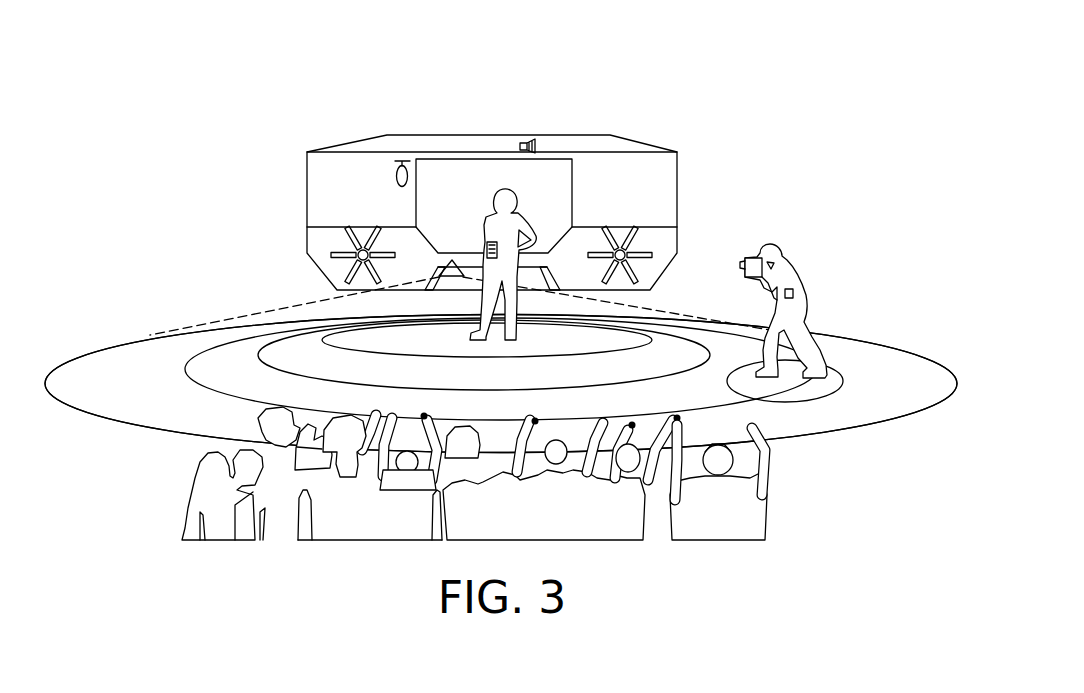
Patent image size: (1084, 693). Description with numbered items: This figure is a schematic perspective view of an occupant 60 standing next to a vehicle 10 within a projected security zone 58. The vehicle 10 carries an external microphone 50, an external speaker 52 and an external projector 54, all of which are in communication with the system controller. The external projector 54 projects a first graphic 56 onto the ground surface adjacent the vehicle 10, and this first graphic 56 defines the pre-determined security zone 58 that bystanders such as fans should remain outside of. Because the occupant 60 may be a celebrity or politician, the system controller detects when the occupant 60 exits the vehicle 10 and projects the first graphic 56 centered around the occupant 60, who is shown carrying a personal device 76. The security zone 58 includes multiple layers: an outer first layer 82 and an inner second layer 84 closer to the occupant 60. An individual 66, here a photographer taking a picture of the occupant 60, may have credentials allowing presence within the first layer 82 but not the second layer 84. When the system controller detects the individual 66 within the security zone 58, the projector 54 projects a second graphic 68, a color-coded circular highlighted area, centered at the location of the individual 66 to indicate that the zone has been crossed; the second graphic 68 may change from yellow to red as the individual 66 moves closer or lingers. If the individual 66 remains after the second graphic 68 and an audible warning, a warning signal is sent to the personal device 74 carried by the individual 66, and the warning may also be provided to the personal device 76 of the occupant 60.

The vehicle 10 is at (610, 200).
The external microphone 50 is at (397, 178).
The external speaker 52 is at (532, 138).
The external projector 54 is at (436, 269).
The first graphic 56 is at (147, 432).
The security zone 58 is at (872, 390).
The occupant 60 is at (497, 223).
The individual 66 is at (785, 256).
The second graphic 68 is at (817, 400).
The personal device 74 is at (798, 296).
The personal device 76 is at (487, 245).
The first layer 82 is at (102, 394).
The second layer 84 is at (217, 380).